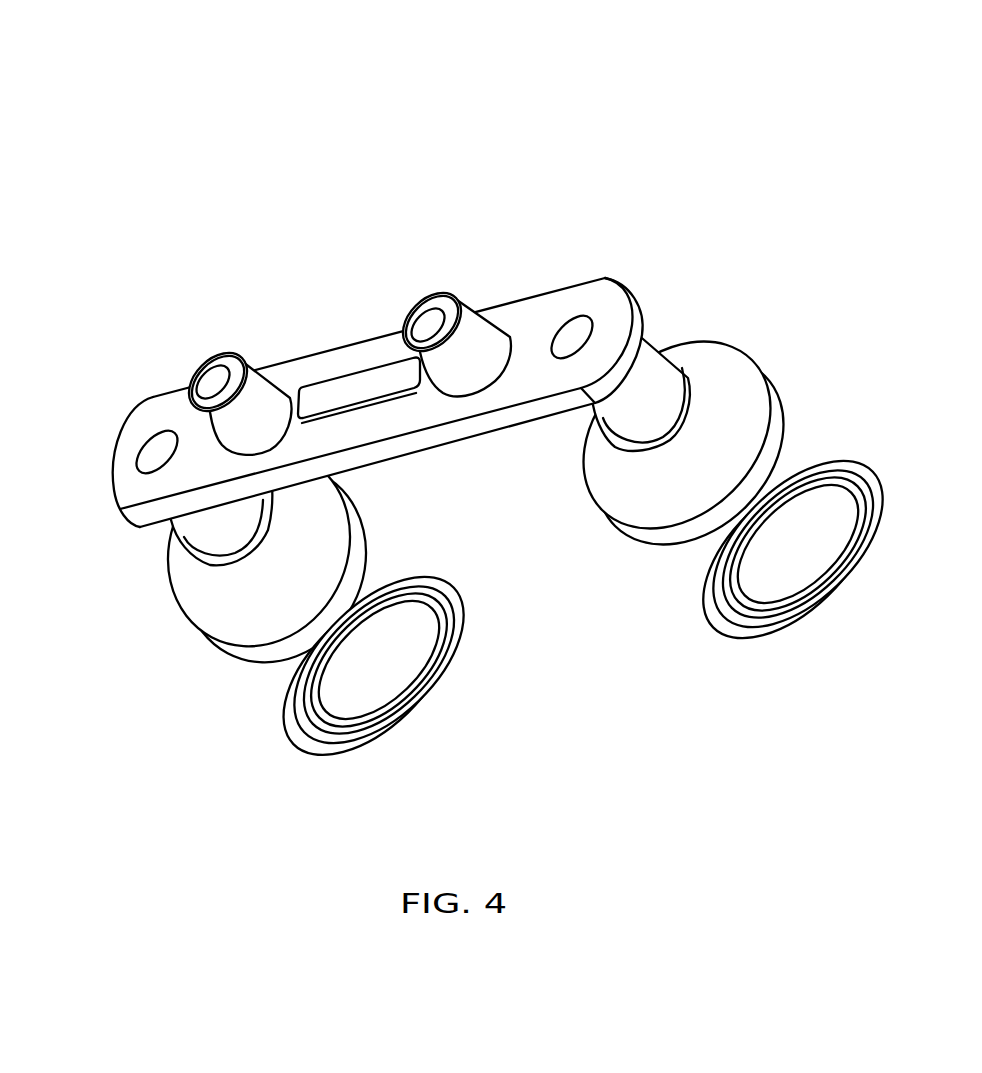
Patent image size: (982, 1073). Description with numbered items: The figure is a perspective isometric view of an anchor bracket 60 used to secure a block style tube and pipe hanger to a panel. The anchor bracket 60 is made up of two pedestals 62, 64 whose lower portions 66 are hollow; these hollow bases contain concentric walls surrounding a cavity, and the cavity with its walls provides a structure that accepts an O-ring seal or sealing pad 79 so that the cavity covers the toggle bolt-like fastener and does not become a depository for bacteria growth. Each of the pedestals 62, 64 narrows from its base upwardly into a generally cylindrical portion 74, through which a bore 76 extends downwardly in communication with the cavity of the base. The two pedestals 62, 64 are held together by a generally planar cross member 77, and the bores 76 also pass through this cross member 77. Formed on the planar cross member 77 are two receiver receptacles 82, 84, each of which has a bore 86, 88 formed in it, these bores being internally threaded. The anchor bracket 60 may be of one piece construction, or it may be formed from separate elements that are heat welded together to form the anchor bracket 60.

The anchor bracket 60 is at (471, 431).
The pedestal 62 is at (207, 642).
The pedestal 64 is at (655, 545).
The lower portion 66 is at (280, 593).
The generally cylindrical portion 74 is at (175, 528).
The bore 76 is at (142, 470).
The generally planar cross member 77 is at (340, 347).
The sealing pad 79 is at (357, 745).
The receiver receptacle 82 is at (197, 370).
The receiver receptacle 84 is at (465, 322).
The bore 86 is at (218, 366).
The bore 88 is at (427, 322).